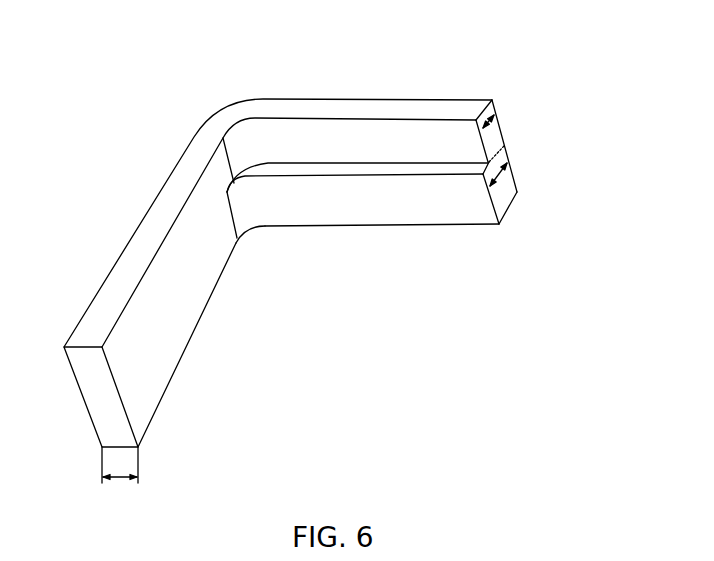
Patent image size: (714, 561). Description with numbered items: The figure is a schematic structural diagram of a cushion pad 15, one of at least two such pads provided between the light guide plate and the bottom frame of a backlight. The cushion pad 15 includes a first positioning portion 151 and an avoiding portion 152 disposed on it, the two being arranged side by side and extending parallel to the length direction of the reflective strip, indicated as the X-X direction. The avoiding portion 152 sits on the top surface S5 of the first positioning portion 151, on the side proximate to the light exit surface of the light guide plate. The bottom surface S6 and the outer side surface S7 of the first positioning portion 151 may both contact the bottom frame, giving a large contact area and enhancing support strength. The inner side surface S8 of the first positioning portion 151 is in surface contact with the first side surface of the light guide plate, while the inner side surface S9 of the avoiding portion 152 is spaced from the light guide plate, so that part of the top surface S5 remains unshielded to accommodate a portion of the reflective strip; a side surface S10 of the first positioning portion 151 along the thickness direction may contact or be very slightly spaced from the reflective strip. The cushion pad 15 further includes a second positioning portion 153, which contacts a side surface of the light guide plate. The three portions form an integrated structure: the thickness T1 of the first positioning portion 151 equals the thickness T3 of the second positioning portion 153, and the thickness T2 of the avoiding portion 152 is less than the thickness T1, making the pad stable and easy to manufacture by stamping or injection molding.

The cushion pad 15 is at (106, 24).
The first positioning portion 151 is at (428, 200).
The avoiding portion 152 is at (398, 142).
The second positioning portion 153 is at (173, 301).
The top surface of the first positioning portion S5 is at (448, 165).
The bottom surface of the first positioning portion S6 is at (358, 228).
The outer side surface of the first positioning portion S7 is at (512, 167).
The inner side surface of the first positioning portion S8 is at (327, 203).
The inner side surface of the avoiding portion S9 is at (328, 142).
The side surface of the first positioning portion S10 is at (505, 198).
The thickness of the first positioning portion T1 is at (507, 163).
The thickness of the avoiding portion T2 is at (532, 102).
The thickness of the second positioning portion T3 is at (120, 465).
The X-X direction X-X is at (385, 28).